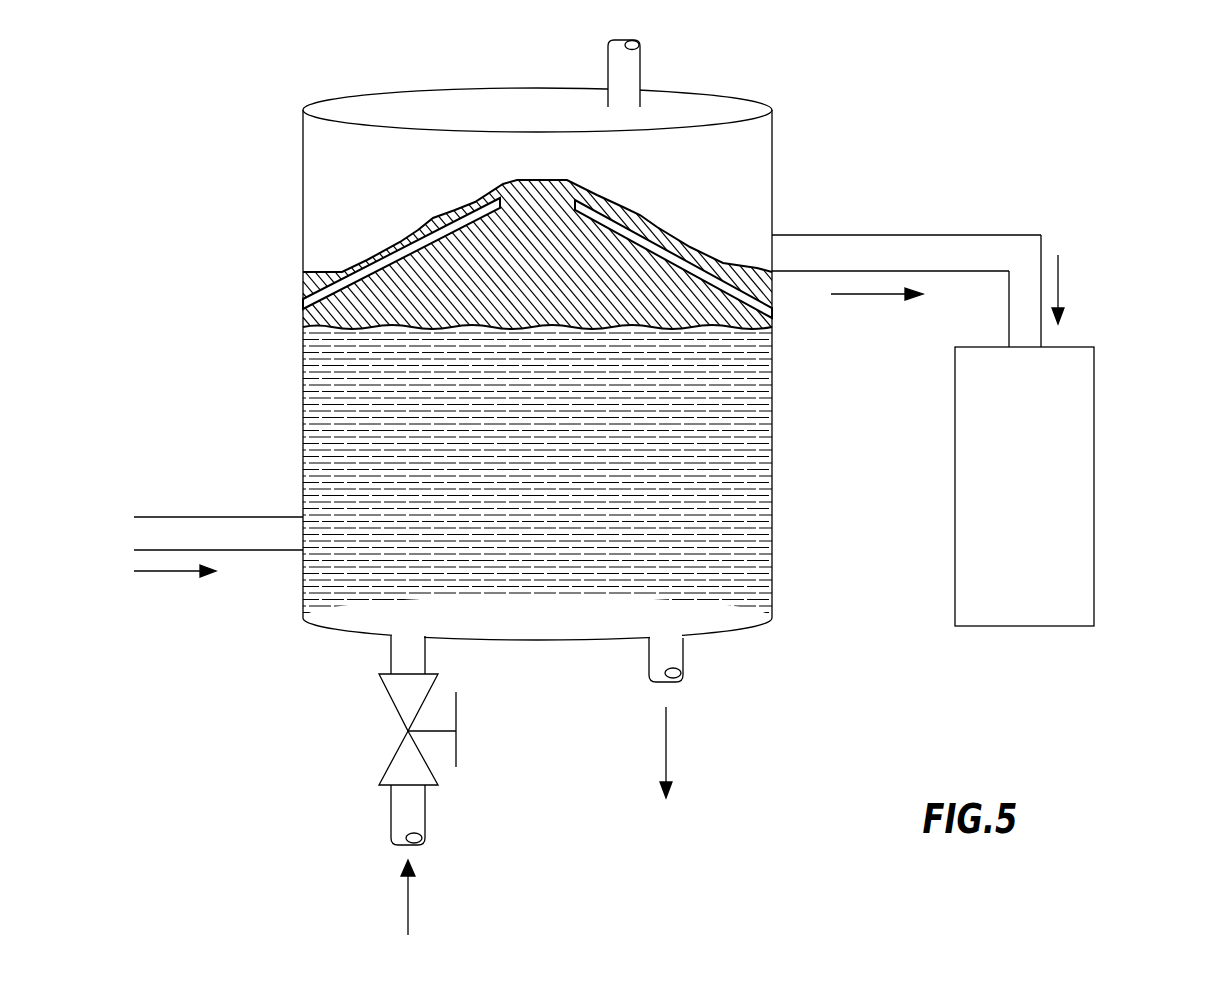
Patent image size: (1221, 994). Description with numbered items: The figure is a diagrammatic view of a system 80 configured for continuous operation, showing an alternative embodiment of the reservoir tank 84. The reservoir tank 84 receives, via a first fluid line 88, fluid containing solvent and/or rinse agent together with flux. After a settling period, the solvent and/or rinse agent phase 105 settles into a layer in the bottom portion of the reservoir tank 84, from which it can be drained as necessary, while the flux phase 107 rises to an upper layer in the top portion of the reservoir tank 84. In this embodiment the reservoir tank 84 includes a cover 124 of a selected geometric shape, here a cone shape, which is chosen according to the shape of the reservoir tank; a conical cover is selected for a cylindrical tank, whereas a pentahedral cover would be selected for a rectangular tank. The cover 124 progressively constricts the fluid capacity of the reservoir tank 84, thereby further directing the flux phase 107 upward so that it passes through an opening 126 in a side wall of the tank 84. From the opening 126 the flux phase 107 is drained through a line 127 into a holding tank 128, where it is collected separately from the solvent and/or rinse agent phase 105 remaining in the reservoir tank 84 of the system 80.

The system 80 is at (842, 78).
The second reservoir tank 84 is at (300, 197).
The first fluid line 88 is at (245, 554).
The solvent and/or rinse agent phase 105 is at (748, 532).
The flux phase 107 is at (333, 367).
The cover 124 is at (345, 270).
The opening 126 is at (770, 253).
The line 127 is at (965, 233).
The holding tank 128 is at (1094, 518).